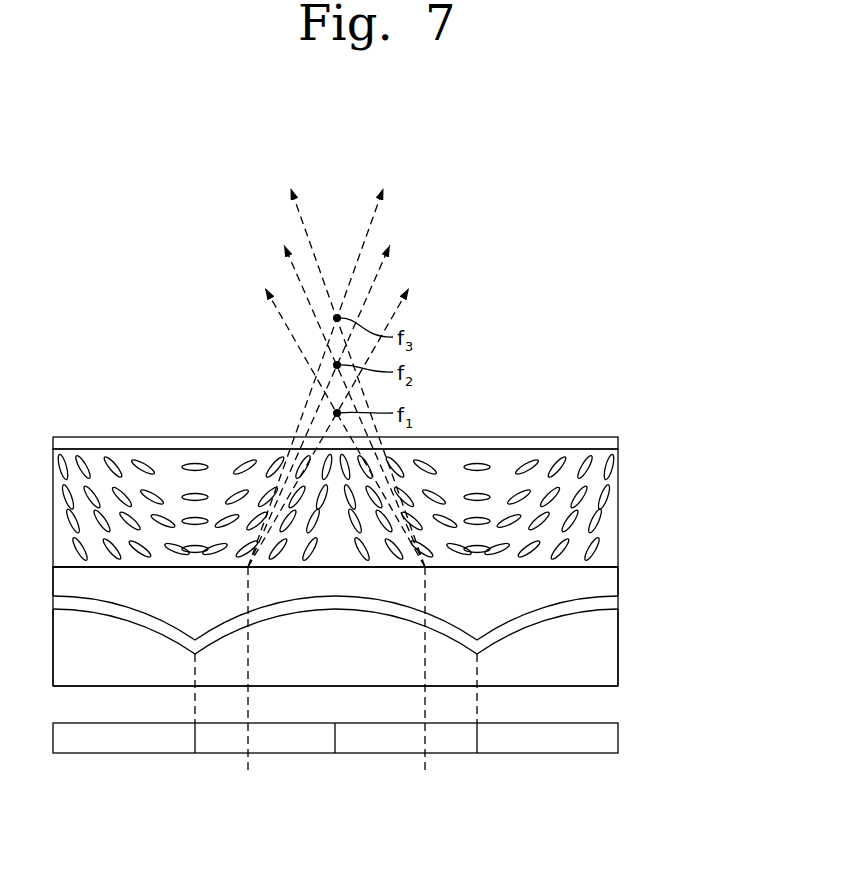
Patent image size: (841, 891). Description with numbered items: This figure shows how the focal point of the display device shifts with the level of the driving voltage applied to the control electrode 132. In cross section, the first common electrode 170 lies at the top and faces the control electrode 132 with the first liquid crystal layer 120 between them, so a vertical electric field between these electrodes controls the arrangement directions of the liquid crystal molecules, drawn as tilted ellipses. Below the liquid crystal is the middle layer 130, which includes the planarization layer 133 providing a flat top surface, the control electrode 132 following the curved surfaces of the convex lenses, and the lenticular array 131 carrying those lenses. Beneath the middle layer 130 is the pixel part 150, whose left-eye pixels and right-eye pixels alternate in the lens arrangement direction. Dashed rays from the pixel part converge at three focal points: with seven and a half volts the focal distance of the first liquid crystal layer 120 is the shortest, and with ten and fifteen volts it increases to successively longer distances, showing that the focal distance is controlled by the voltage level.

The first common electrode 170 is at (612, 443).
The first liquid crystal layer 120 is at (612, 527).
The middle layer 130 is at (713, 573).
The planarization layer 133 is at (612, 583).
The control electrode 132 is at (612, 601).
The lenticular array 131 is at (612, 650).
The pixel part 150 is at (636, 740).